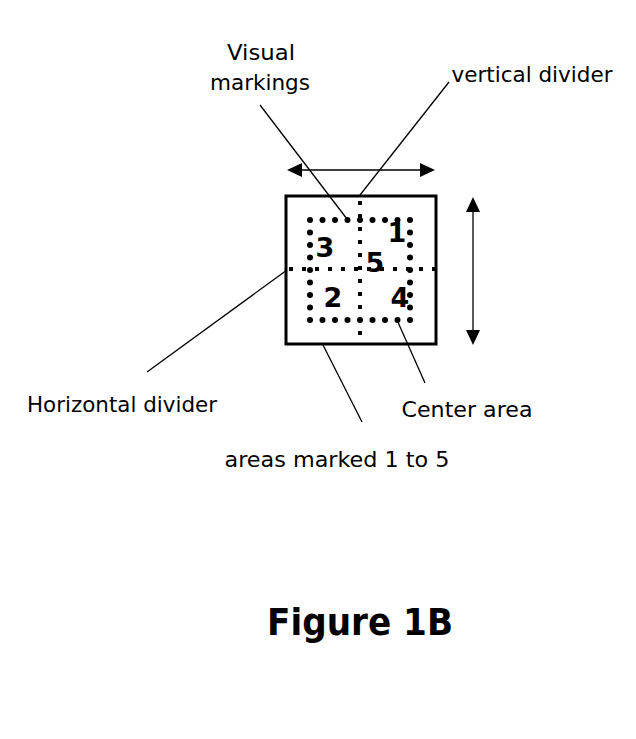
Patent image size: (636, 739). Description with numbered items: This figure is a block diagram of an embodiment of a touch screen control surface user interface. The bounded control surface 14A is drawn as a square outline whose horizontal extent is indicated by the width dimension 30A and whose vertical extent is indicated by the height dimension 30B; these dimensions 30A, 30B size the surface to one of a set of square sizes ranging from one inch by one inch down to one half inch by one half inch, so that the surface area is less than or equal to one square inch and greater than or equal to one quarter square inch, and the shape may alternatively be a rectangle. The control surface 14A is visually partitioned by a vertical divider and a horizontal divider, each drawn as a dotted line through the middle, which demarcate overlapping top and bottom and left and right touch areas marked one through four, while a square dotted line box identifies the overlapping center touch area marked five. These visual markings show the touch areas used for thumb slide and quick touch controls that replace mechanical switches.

The control surface 14A is at (285, 245).
The control surface width size 30A is at (361, 154).
The control surface height size 30B is at (499, 271).